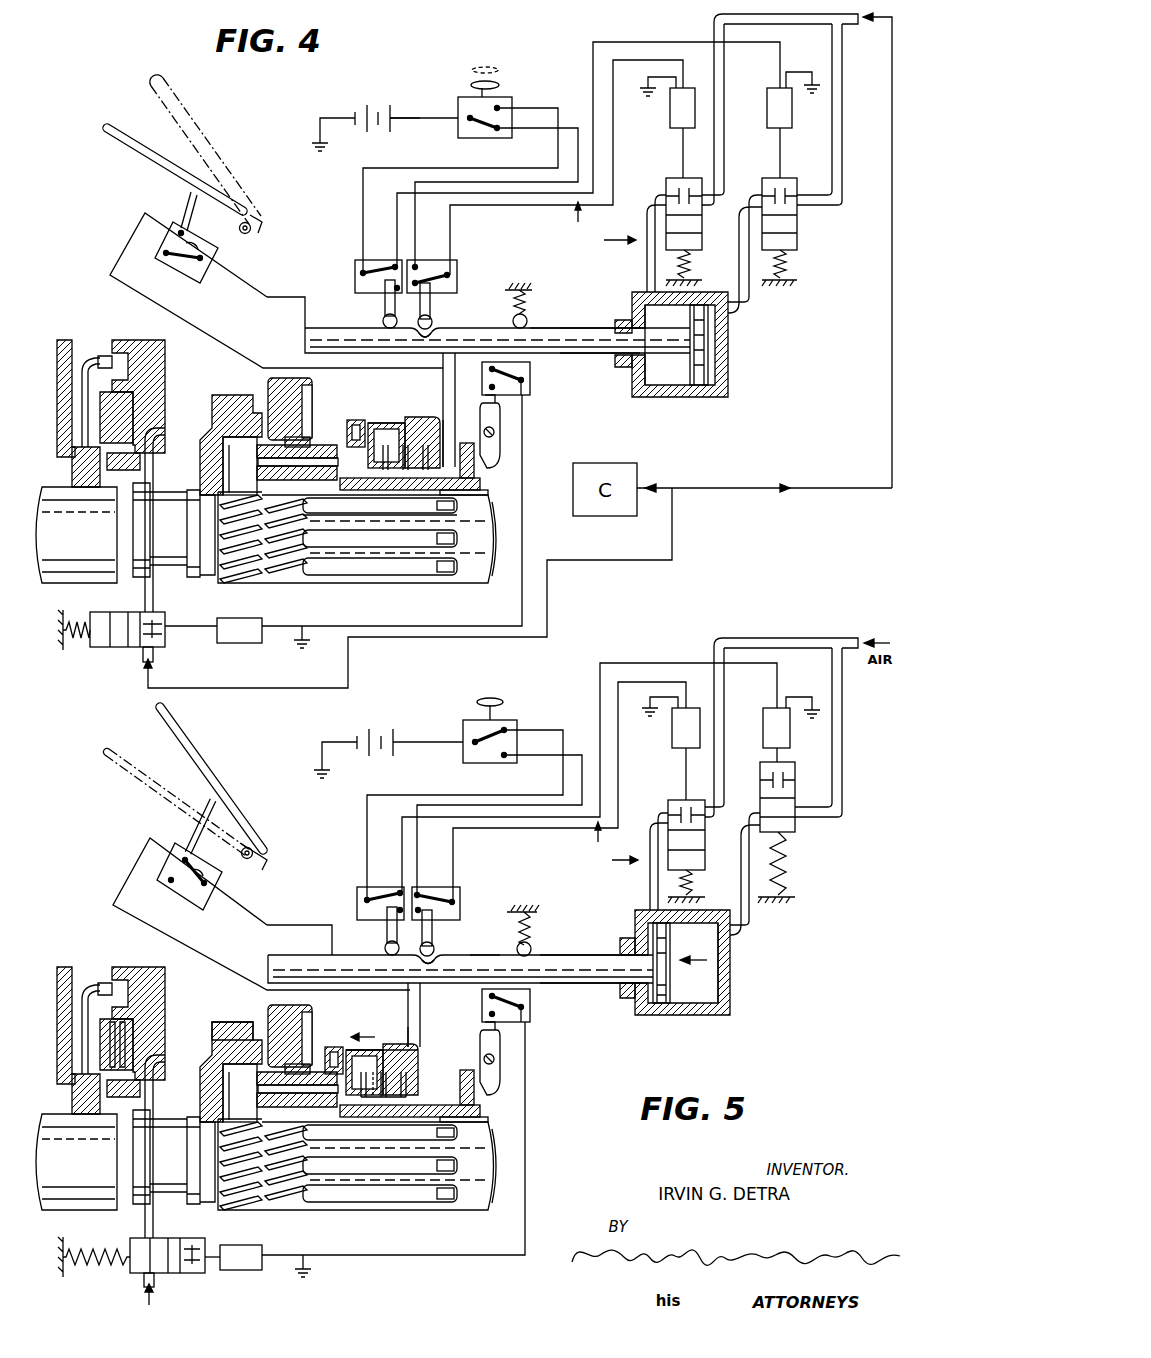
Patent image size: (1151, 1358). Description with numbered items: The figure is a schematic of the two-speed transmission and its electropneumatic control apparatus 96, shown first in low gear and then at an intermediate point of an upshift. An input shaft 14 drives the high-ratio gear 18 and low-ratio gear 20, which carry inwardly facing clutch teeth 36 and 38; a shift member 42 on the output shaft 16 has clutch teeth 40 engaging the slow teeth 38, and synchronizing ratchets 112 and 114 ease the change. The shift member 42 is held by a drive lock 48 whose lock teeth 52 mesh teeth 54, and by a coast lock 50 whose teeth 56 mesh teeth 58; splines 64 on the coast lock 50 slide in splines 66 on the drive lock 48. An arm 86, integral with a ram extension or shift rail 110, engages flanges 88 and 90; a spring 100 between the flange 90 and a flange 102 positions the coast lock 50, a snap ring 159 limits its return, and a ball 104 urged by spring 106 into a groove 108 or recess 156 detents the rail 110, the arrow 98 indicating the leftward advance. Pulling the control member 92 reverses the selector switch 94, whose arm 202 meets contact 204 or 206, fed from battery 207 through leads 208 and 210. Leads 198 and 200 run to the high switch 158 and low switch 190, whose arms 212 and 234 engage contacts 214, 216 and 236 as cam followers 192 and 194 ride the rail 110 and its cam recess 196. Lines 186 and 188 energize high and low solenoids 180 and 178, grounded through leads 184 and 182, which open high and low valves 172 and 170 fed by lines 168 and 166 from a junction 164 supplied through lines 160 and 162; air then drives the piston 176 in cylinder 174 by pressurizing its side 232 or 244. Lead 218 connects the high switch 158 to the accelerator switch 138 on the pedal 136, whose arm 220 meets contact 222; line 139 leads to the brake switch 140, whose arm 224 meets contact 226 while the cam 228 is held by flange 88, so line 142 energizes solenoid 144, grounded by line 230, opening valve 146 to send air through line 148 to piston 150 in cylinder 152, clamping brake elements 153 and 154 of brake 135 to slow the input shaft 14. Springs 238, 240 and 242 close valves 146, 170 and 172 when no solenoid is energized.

In FIG. 4, the input shaft 14 is at (60, 538).
In FIG. 5, the input shaft 14 is at (76, 1173).
In FIG. 4, the output shaft 16 is at (473, 580).
In FIG. 5, the output shaft 16 is at (381, 1182).
In FIG. 4, the high-ratio gear 18 is at (208, 428).
In FIG. 5, the high-ratio gear 18 is at (216, 1072).
In FIG. 4, the low-ratio gear 20 is at (268, 392).
In FIG. 5, the low-ratio gear 20 is at (270, 1031).
In FIG. 4, the clutch teeth 36 is at (240, 466).
In FIG. 5, the clutch teeth 36 is at (240, 1093).
In FIG. 4, the clutch teeth 38 is at (292, 436).
In FIG. 5, the clutch teeth 38 is at (291, 1054).
In FIG. 4, the clutch teeth 40 is at (307, 410).
In FIG. 5, the clutch teeth 40 is at (319, 1032).
In FIG. 4, the shift member 42 is at (325, 500).
In FIG. 5, the shift member 42 is at (277, 1164).
In FIG. 4, the drive lock 48 is at (480, 483).
In FIG. 5, the drive lock 48 is at (410, 1131).
In FIG. 4, the coast lock 50 is at (380, 422).
In FIG. 5, the coast lock 50 is at (400, 1039).
In FIG. 4, the lock teeth 52 is at (366, 468).
In FIG. 4, the lock teeth 54 is at (387, 445).
In FIG. 5, the lock teeth 54 is at (364, 1072).
In FIG. 4, the lock teeth 56 is at (356, 419).
In FIG. 5, the lock teeth 56 is at (334, 1059).
In FIG. 4, the lock teeth 58 is at (347, 433).
In FIG. 5, the lock teeth 58 is at (334, 1060).
In FIG. 5, the axial splines 64 is at (388, 1133).
In FIG. 4, the axial splines 66 is at (452, 492).
In FIG. 5, the axial splines 66 is at (464, 1136).
In FIG. 4, the arm 86 is at (456, 388).
In FIG. 5, the arm 86 is at (433, 1015).
In FIG. 4, the flange 88 is at (475, 460).
In FIG. 5, the flange 88 is at (490, 1088).
In FIG. 4, the flange 90 is at (455, 421).
In FIG. 5, the flange 90 is at (433, 1046).
In FIG. 4, the selector switch control member 92 is at (498, 71).
In FIG. 5, the selector switch control member 92 is at (503, 700).
In FIG. 4, the selector switch 94 is at (458, 100).
In FIG. 5, the selector switch 94 is at (517, 748).
In FIG. 4, the electropneumatic apparatus 96 is at (605, 226).
In FIG. 5, the electropneumatic apparatus 96 is at (612, 846).
In FIG. 5, the arrow 98 is at (382, 1025).
In FIG. 4, the compression coil spring 100 is at (420, 418).
In FIG. 5, the compression coil spring 100 is at (423, 1069).
In FIG. 5, the flange 102 is at (390, 1050).
In FIG. 4, the ball 104 is at (513, 322).
In FIG. 5, the ball 104 is at (544, 945).
In FIG. 4, the compression coil spring 106 is at (533, 289).
In FIG. 5, the compression coil spring 106 is at (544, 925).
In FIG. 4, the groove 108 is at (572, 329).
In FIG. 5, the groove 108 is at (564, 969).
In FIG. 4, the ram extension 110 is at (328, 330).
In FIG. 5, the ram extension 110 is at (324, 957).
In FIG. 5, the ratchet 112 is at (233, 1048).
In FIG. 5, the ratchet 114 is at (353, 1025).
In FIG. 4, the brake 135 is at (90, 346).
In FIG. 5, the brake 135 is at (111, 1026).
In FIG. 4, the accelerator pedal 136 is at (135, 131).
In FIG. 5, the accelerator pedal 136 is at (152, 772).
In FIG. 4, the accelerator switch 138 is at (175, 275).
In FIG. 5, the accelerator switch 138 is at (178, 899).
In FIG. 4, the line 139 is at (128, 245).
In FIG. 5, the line 139 is at (138, 863).
In FIG. 4, the brake switch 140 is at (531, 388).
In FIG. 5, the brake switch 140 is at (529, 1002).
In FIG. 4, the line 142 is at (393, 625).
In FIG. 5, the line 142 is at (420, 1138).
In FIG. 4, the solenoid 144 is at (242, 618).
In FIG. 5, the solenoid 144 is at (234, 1272).
In FIG. 4, the valve 146 is at (165, 613).
In FIG. 5, the valve 146 is at (184, 1181).
In FIG. 5, the line 148 is at (174, 1157).
In FIG. 5, the piston 150 is at (156, 1040).
In FIG. 5, the cylinder 152 is at (160, 1044).
In FIG. 4, the brake elements 153 is at (112, 364).
In FIG. 5, the brake elements 153 is at (124, 1023).
In FIG. 4, the brake elements 154 is at (82, 410).
In FIG. 5, the brake elements 154 is at (62, 1029).
In FIG. 4, the recess 156 is at (540, 332).
In FIG. 5, the recess 156 is at (483, 954).
In FIG. 4, the high switch 158 is at (355, 268).
In FIG. 5, the high switch 158 is at (365, 889).
In FIG. 4, the snap ring 159 is at (372, 418).
In FIG. 5, the snap ring 159 is at (423, 1059).
In FIG. 4, the line 160 is at (248, 688).
In FIG. 4, the line 162 is at (892, 152).
In FIG. 4, the junction 164 is at (814, 24).
In FIG. 5, the junction 164 is at (836, 638).
In FIG. 4, the line 166 is at (718, 14).
In FIG. 5, the line 166 is at (761, 638).
In FIG. 4, the line 168 is at (842, 113).
In FIG. 5, the line 168 is at (842, 709).
In FIG. 4, the low valve 170 is at (668, 180).
In FIG. 5, the low valve 170 is at (672, 804).
In FIG. 4, the high valve 172 is at (765, 178).
In FIG. 5, the high valve 172 is at (796, 772).
In FIG. 4, the cylinder 174 is at (688, 397).
In FIG. 5, the cylinder 174 is at (660, 1015).
In FIG. 4, the piston 176 is at (708, 338).
In FIG. 5, the piston 176 is at (672, 1001).
In FIG. 4, the low solenoid 178 is at (670, 120).
In FIG. 5, the low solenoid 178 is at (672, 738).
In FIG. 4, the high solenoid 180 is at (767, 96).
In FIG. 5, the high solenoid 180 is at (764, 724).
In FIG. 4, the lead 182 is at (650, 77).
In FIG. 5, the lead 182 is at (650, 701).
In FIG. 4, the lead 184 is at (812, 72).
In FIG. 5, the lead 184 is at (812, 697).
In FIG. 4, the line 186 is at (660, 42).
In FIG. 5, the line 186 is at (668, 663).
In FIG. 4, the line 188 is at (613, 180).
In FIG. 5, the line 188 is at (618, 771).
In FIG. 4, the low switch 190 is at (457, 272).
In FIG. 5, the low switch 190 is at (457, 894).
In FIG. 4, the cam follower 192 is at (383, 320).
In FIG. 5, the cam follower 192 is at (371, 931).
In FIG. 4, the cam follower 194 is at (435, 326).
In FIG. 5, the cam follower 194 is at (442, 933).
In FIG. 4, the cam recess 196 is at (446, 345).
In FIG. 5, the cam recess 196 is at (430, 971).
In FIG. 4, the lead 198 is at (363, 193).
In FIG. 5, the lead 198 is at (367, 831).
In FIG. 4, the lead 200 is at (415, 183).
In FIG. 5, the lead 200 is at (417, 809).
In FIG. 4, the movable arm 202 is at (480, 132).
In FIG. 5, the movable arm 202 is at (474, 738).
In FIG. 4, the contact 204 is at (505, 105).
In FIG. 5, the contact 204 is at (508, 730).
In FIG. 4, the contact 206 is at (498, 132).
In FIG. 5, the contact 206 is at (504, 760).
In FIG. 4, the battery 207 is at (395, 128).
In FIG. 5, the battery 207 is at (397, 753).
In FIG. 4, the lead 208 is at (330, 113).
In FIG. 4, the lead 210 is at (411, 116).
In FIG. 4, the movable contact arm 212 is at (360, 279).
In FIG. 5, the movable contact arm 212 is at (360, 897).
In FIG. 4, the contact 214 is at (392, 262).
In FIG. 5, the contact 214 is at (385, 873).
In FIG. 4, the contact 216 is at (399, 291).
In FIG. 5, the contact 216 is at (410, 927).
In FIG. 4, the lead 218 is at (262, 297).
In FIG. 5, the lead 218 is at (264, 924).
In FIG. 4, the movable contact arm 220 is at (218, 257).
In FIG. 5, the movable contact arm 220 is at (222, 880).
In FIG. 4, the contact 222 is at (180, 232).
In FIG. 5, the contact 222 is at (186, 857).
In FIG. 4, the movable contact arm 224 is at (525, 395).
In FIG. 5, the movable contact arm 224 is at (547, 1029).
In FIG. 4, the contact 226 is at (530, 369).
In FIG. 5, the contact 226 is at (542, 1009).
In FIG. 4, the brake switch actuator cam 228 is at (500, 445).
In FIG. 5, the brake switch actuator cam 228 is at (526, 1058).
In FIG. 4, the line 230 is at (309, 640).
In FIG. 5, the line 230 is at (322, 1266).
In FIG. 4, the side 232 is at (710, 352).
In FIG. 5, the side 232 is at (713, 980).
In FIG. 4, the contact arm 234 is at (458, 283).
In FIG. 5, the contact arm 234 is at (457, 904).
In FIG. 4, the contact 236 is at (418, 262).
In FIG. 5, the contact 236 is at (432, 874).
In FIG. 4, the spring 238 is at (797, 272).
In FIG. 5, the spring 238 is at (794, 872).
In FIG. 4, the spring 240 is at (700, 260).
In FIG. 5, the spring 240 is at (703, 880).
In FIG. 4, the spring 242 is at (70, 647).
In FIG. 5, the spring 242 is at (94, 1270).
In FIG. 4, the side 244 is at (660, 395).
In FIG. 5, the side 244 is at (642, 942).